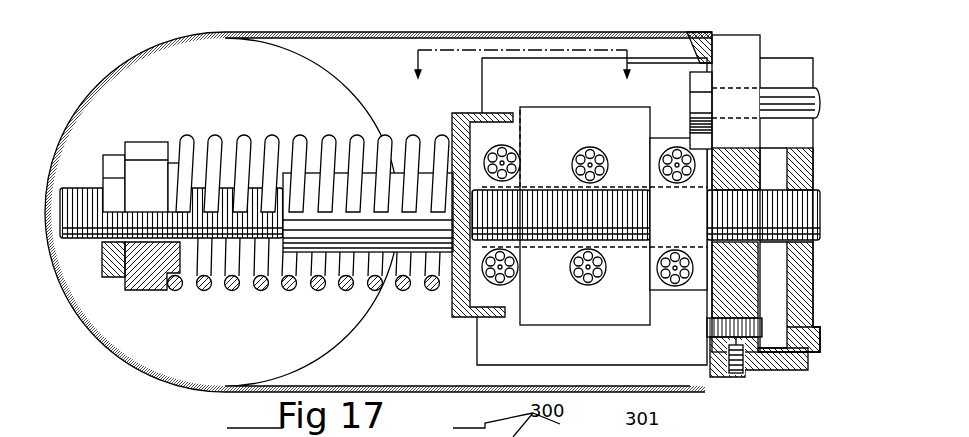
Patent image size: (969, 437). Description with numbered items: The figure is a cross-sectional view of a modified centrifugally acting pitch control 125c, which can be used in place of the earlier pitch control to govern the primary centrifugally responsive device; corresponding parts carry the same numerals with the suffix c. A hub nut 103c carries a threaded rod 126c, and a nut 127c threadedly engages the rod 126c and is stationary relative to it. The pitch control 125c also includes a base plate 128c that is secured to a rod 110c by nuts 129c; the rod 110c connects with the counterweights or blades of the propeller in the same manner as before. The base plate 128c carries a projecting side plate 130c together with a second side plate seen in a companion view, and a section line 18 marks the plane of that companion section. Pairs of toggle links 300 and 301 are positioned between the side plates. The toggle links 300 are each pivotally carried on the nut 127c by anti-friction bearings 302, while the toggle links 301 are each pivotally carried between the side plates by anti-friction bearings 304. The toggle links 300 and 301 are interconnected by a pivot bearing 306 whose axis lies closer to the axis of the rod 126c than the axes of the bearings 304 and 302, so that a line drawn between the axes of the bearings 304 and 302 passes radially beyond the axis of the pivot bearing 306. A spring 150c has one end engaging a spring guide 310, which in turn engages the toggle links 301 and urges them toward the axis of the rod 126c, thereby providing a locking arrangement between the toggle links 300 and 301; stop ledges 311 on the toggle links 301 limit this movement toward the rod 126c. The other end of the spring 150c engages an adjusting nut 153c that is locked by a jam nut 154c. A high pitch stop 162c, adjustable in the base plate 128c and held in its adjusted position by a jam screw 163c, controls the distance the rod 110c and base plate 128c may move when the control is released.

The pitch control 125c is at (183, 50).
The threaded rod 126c is at (80, 240).
The adjusting nut 153c is at (152, 153).
The jam nut 154c is at (113, 160).
The spring 150c is at (272, 141).
The section line 18- 18 is at (524, 75).
The spring guide 310 is at (470, 113).
The toggle links 300 is at (590, 106).
The side plate 130c is at (572, 68).
The toggle links 301 is at (556, 120).
The nut 127c is at (692, 223).
The anti-friction bearings 304 is at (510, 148).
The pivot bearing 306 is at (593, 160).
The stop ledges 311 is at (650, 140).
The nuts 129c is at (700, 82).
The anti-friction bearings 302 is at (703, 150).
The base plate 128c is at (750, 50).
The rod 110c is at (788, 103).
The high pitch stop 162c is at (716, 338).
The jam screw 163c is at (733, 376).
The hub nut 103c is at (812, 350).